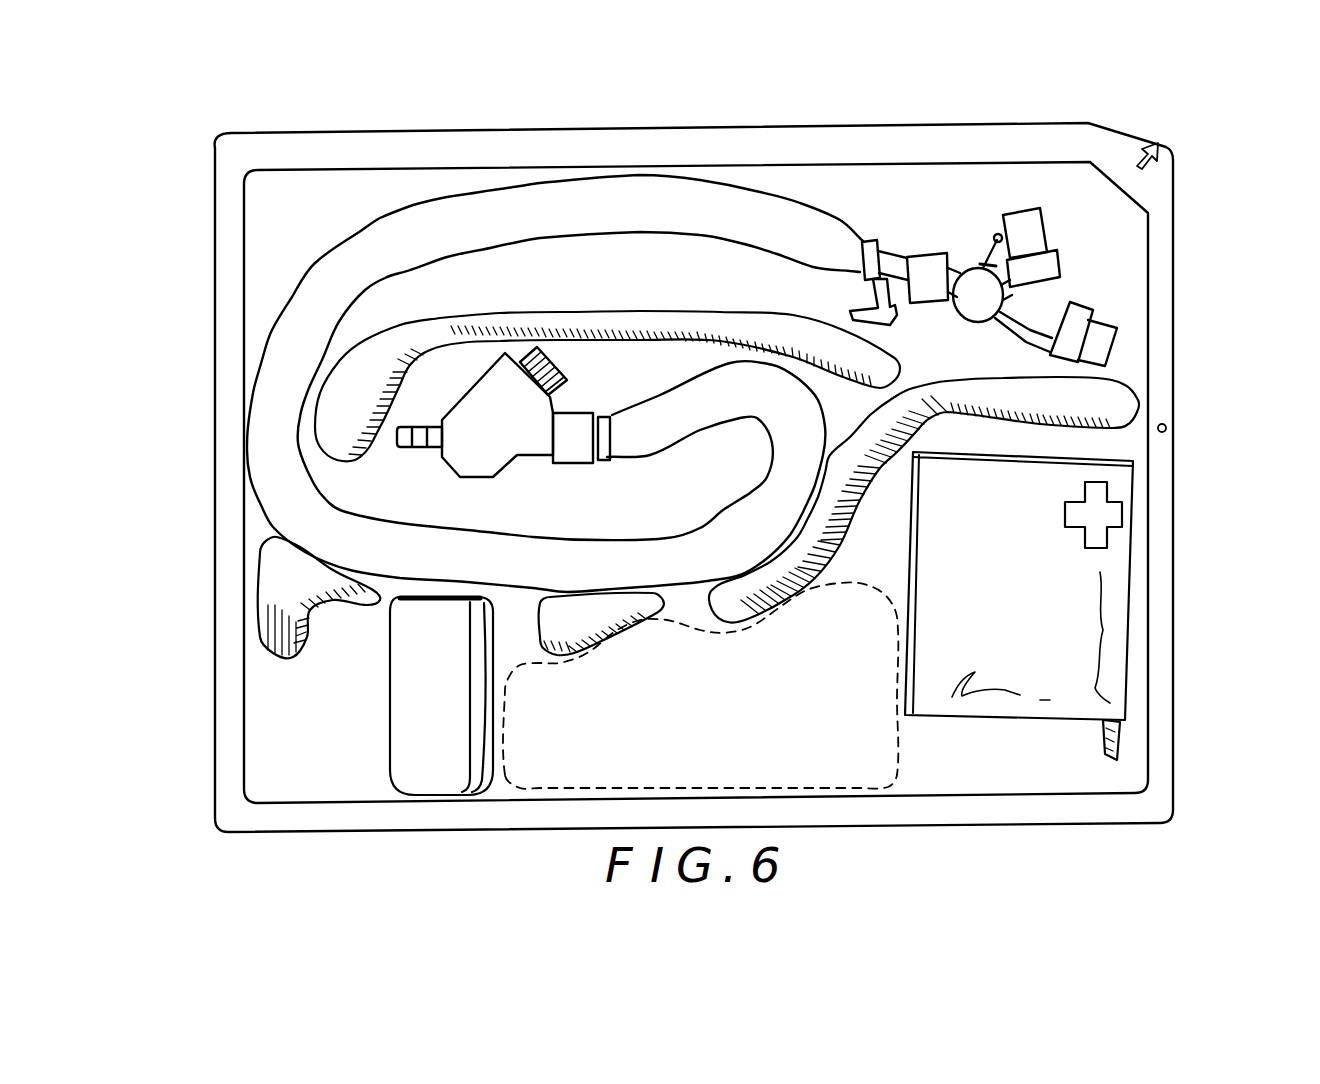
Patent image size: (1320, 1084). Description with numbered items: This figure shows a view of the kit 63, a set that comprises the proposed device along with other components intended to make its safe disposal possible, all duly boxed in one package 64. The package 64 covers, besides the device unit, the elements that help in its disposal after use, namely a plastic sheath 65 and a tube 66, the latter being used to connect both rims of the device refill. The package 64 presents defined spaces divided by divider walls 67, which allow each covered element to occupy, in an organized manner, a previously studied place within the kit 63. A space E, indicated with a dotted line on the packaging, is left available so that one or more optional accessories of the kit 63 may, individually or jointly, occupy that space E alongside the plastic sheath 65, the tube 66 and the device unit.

The kit 63 is at (1209, 243).
The package 64 is at (255, 598).
The plastic sheath 65 is at (1130, 590).
The tube 66 is at (446, 786).
The divider walls 67 is at (616, 330).
The space E is at (805, 745).